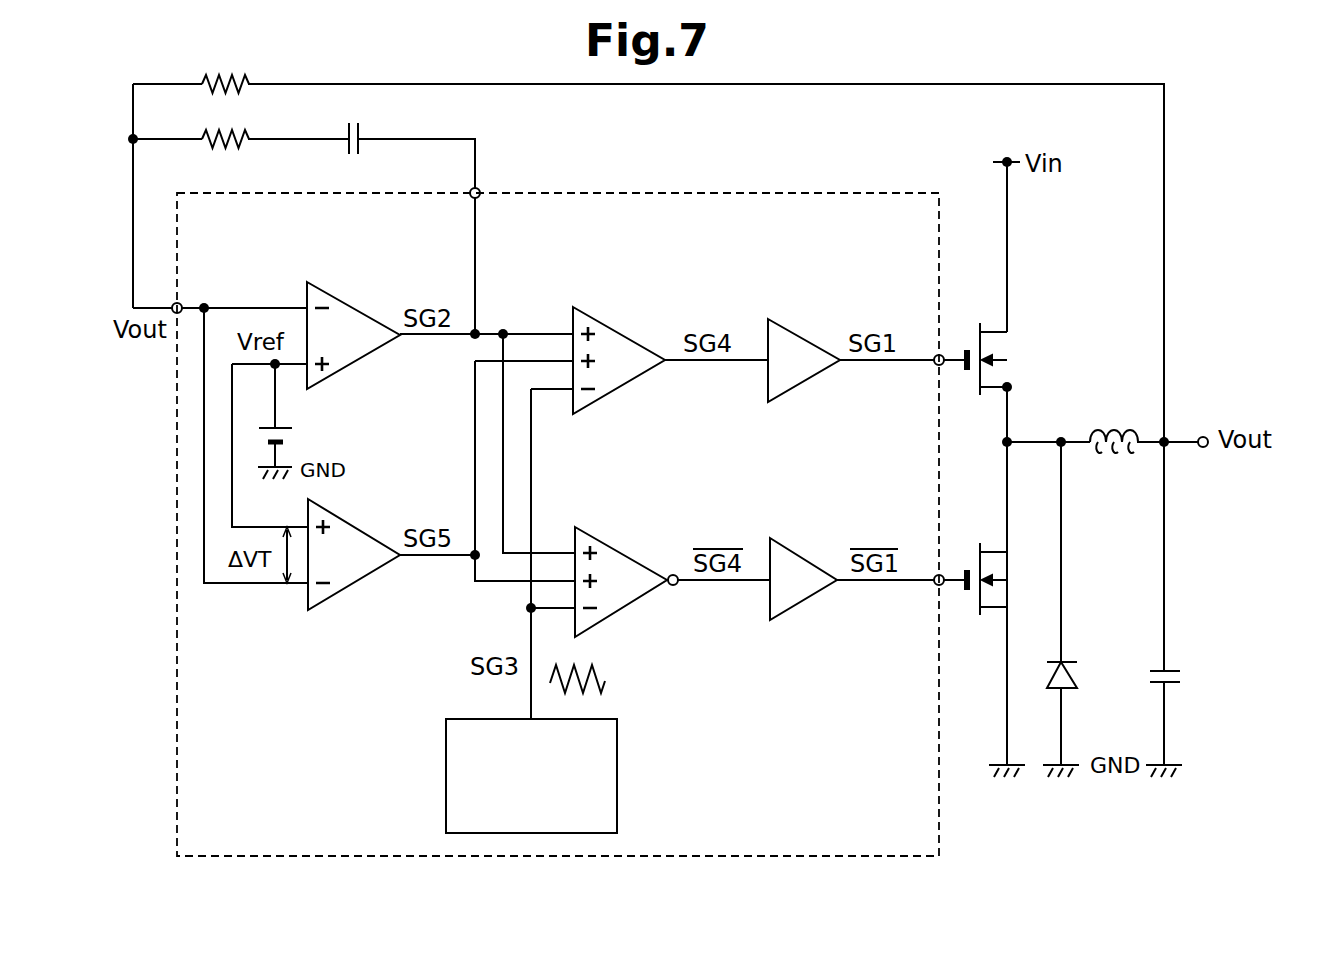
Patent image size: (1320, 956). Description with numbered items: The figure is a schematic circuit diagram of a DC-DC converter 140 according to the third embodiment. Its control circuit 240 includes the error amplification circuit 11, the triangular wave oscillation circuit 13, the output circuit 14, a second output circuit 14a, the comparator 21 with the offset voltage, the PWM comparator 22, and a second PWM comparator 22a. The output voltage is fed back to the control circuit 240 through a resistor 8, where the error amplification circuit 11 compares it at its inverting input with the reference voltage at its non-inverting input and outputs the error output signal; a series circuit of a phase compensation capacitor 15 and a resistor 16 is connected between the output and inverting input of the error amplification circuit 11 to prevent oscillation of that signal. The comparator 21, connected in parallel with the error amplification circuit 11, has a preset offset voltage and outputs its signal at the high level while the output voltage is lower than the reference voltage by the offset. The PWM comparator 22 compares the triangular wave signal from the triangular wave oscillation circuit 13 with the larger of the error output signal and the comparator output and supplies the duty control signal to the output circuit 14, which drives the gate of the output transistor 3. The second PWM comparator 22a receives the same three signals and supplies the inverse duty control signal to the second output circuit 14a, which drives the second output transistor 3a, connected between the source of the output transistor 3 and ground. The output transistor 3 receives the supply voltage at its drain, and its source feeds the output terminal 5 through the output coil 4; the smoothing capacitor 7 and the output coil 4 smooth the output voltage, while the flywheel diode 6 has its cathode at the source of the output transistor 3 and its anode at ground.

The resistor 8 is at (226, 80).
The resistor 16 is at (226, 136).
The phase compensation capacitor 15 is at (360, 128).
The control circuit 240 is at (800, 192).
The error amplification circuit 11 is at (358, 363).
The comparator 21 is at (361, 531).
The PWM comparator 22 is at (617, 332).
The second PWM comparator 22a is at (617, 551).
The output circuit 14 is at (825, 369).
The second output circuit 14a is at (825, 587).
The triangular wave oscillation circuit 13 is at (617, 745).
The output transistor 3 is at (979, 336).
The second output transistor 3a is at (979, 555).
The output coil 4 is at (1120, 427).
The output terminal 5 is at (1203, 437).
The flywheel diode 6 is at (1078, 677).
The smoothing capacitor 7 is at (1180, 668).
The DC-DC converter 140 is at (1221, 790).